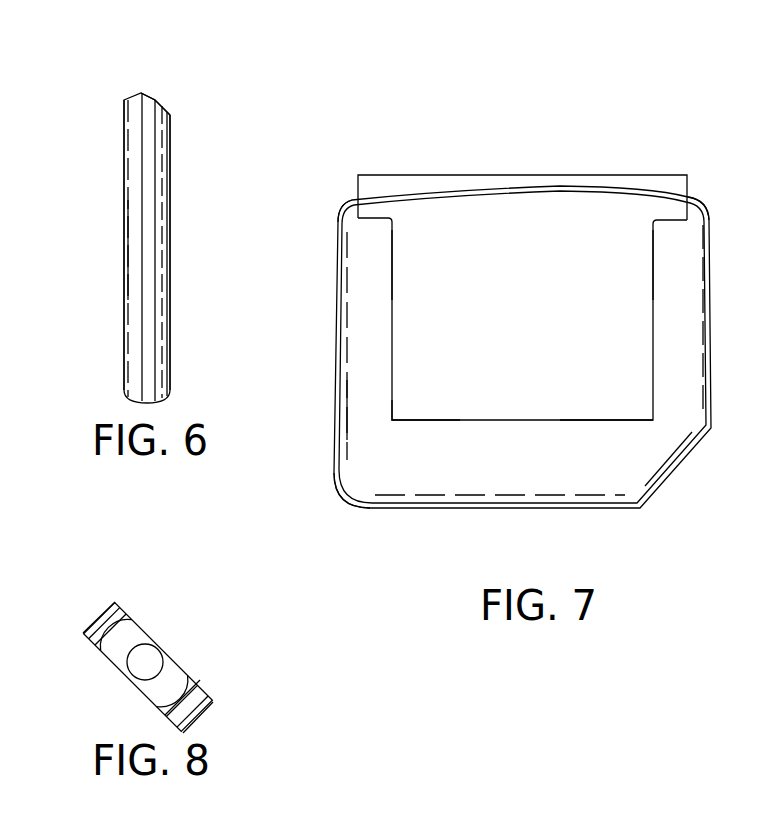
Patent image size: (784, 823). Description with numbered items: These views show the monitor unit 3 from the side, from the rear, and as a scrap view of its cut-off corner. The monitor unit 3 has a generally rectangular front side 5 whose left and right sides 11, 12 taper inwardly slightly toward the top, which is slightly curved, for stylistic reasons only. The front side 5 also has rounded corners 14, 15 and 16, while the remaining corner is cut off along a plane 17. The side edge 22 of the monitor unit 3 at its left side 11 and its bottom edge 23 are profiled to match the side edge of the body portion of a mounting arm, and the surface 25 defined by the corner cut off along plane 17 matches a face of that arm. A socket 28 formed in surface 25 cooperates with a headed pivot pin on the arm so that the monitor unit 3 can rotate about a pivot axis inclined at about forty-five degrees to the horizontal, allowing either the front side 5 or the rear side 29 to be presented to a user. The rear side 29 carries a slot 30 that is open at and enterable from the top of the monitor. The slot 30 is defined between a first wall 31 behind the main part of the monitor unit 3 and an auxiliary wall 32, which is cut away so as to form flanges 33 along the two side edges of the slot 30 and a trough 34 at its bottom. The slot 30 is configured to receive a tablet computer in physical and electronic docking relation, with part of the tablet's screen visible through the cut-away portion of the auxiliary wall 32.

In FIG. 6, the monitor unit 3 is at (136, 84).
In FIG. 7, the monitor unit 3 is at (392, 150).
In FIG. 6, the front side 5 is at (125, 165).
In FIG. 7, the left side 11 is at (710, 292).
In FIG. 6, the right side 12 is at (138, 250).
In FIG. 7, the right side 12 is at (337, 355).
In FIG. 7, the rounded corner 14 is at (688, 205).
In FIG. 7, the rounded corner 15 is at (352, 205).
In FIG. 7, the rounded corner 16 is at (338, 490).
In FIG. 7, the plane 17 is at (680, 465).
In FIG. 8, the plane 17 is at (176, 676).
In FIG. 8, the side edge 22 is at (90, 635).
In FIG. 7, the bottom edge 23 is at (505, 500).
In FIG. 8, the bottom edge 23 is at (205, 703).
In FIG. 8, the surface 25 is at (137, 636).
In FIG. 8, the socket 28 is at (152, 660).
In FIG. 6, the rear side 29 is at (170, 220).
In FIG. 7, the rear side 29 is at (425, 437).
In FIG. 6, the slot 30 is at (157, 105).
In FIG. 7, the slot 30 is at (648, 205).
In FIG. 7, the first wall 31 is at (535, 307).
In FIG. 7, the auxiliary wall 32 is at (360, 432).
In FIG. 7, the flanges 33 is at (360, 288).
In FIG. 7, the trough 34 is at (572, 417).